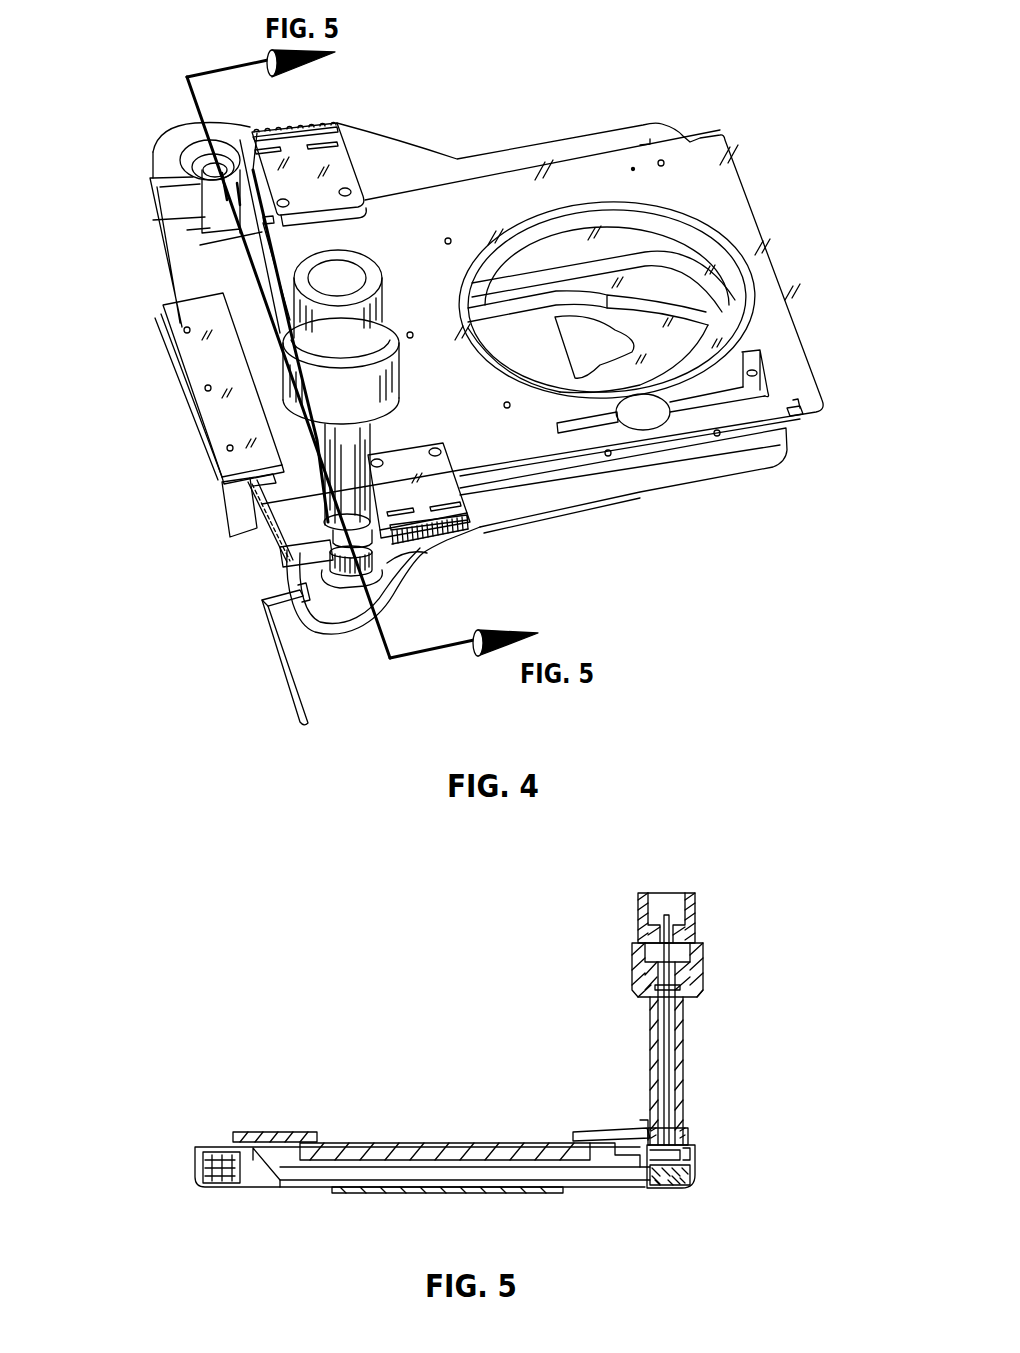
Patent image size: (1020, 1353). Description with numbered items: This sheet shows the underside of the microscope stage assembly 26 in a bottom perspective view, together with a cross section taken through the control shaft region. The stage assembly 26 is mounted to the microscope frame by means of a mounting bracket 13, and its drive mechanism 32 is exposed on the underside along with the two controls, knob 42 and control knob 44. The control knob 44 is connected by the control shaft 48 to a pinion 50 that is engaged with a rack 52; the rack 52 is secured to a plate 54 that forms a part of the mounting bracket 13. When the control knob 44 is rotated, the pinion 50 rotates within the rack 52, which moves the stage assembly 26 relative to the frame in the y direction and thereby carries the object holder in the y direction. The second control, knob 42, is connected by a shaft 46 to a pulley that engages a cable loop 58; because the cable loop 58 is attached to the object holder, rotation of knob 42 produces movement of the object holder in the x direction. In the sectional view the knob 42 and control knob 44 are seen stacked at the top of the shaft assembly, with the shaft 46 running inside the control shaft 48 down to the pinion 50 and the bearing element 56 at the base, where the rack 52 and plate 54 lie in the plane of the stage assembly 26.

In FIG. 4, the mounting bracket 13 is at (210, 373).
In FIG. 4, the microscope stage assembly 26 is at (718, 514).
In FIG. 4, the drive mechanism 32 is at (345, 540).
In FIG. 5, the drive mechanism 32 is at (683, 1085).
In FIG. 4, the knob 42 is at (355, 258).
In FIG. 5, the knob 42 is at (695, 912).
In FIG. 4, the control knob 44 is at (333, 395).
In FIG. 5, the control knob 44 is at (705, 965).
In FIG. 5, the shaft 46 is at (670, 1040).
In FIG. 4, the control shaft 48 is at (305, 557).
In FIG. 5, the control shaft 48 is at (650, 1045).
In FIG. 4, the pinion 50 is at (343, 578).
In FIG. 5, the pinion 50 is at (690, 1130).
In FIG. 4, the rack 52 is at (440, 490).
In FIG. 5, the rack 52 is at (613, 1132).
In FIG. 4, the plate 54 is at (715, 160).
In FIG. 4, the bearing housing 56 is at (348, 578).
In FIG. 5, the bearing housing 56 is at (695, 1155).
In FIG. 4, the cable loop 58 is at (224, 272).